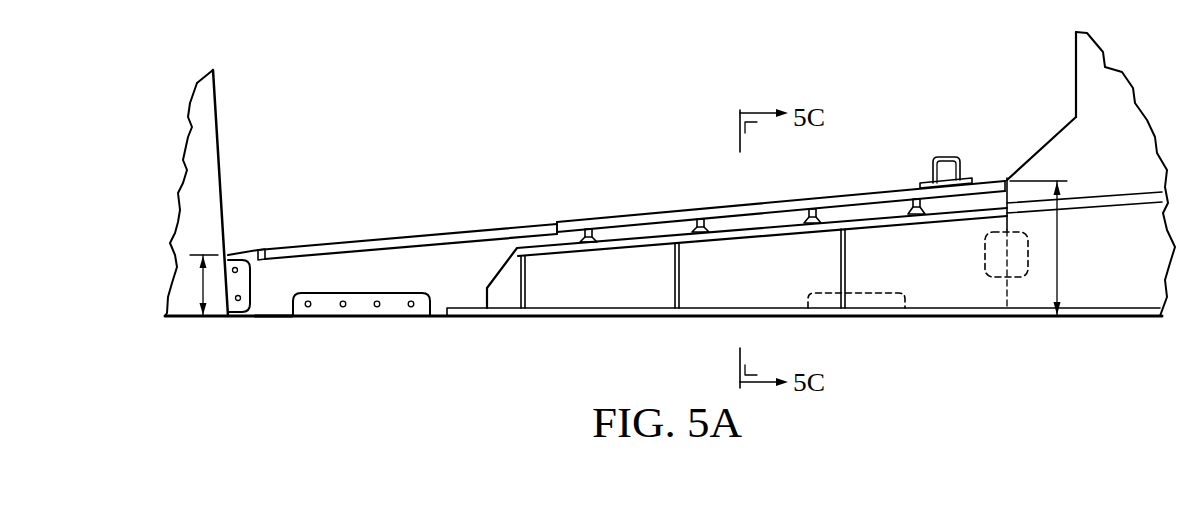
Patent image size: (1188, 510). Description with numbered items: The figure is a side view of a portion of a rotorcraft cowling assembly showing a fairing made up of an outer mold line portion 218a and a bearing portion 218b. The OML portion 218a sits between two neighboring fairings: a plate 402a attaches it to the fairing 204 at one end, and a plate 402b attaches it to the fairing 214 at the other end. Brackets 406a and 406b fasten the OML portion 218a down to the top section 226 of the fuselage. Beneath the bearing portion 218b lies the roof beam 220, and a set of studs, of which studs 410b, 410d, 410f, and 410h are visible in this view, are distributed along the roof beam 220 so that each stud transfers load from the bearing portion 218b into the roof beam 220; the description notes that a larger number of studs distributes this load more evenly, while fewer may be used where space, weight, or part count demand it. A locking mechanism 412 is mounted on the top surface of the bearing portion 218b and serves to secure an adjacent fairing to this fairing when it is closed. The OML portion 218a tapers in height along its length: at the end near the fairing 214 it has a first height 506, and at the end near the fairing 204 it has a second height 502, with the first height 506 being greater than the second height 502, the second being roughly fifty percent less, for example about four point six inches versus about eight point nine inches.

The fairing 204 is at (209, 164).
The fairing 214 is at (1083, 88).
The outer mold line portion 218a is at (388, 266).
The bearing portion 218b is at (505, 221).
The roof beam 220 is at (607, 289).
The top section of the fuselage 226 is at (275, 301).
The plate 402a is at (243, 283).
The plate 402b is at (983, 249).
The bracket 406a is at (389, 303).
The bracket 406b is at (866, 297).
The stud 410b is at (588, 229).
The stud 410d is at (698, 219).
The stud 410f is at (811, 209).
The stud 410h is at (914, 199).
The locking mechanism 412 is at (947, 157).
The second height 502 is at (203, 285).
The first height 506 is at (1060, 248).